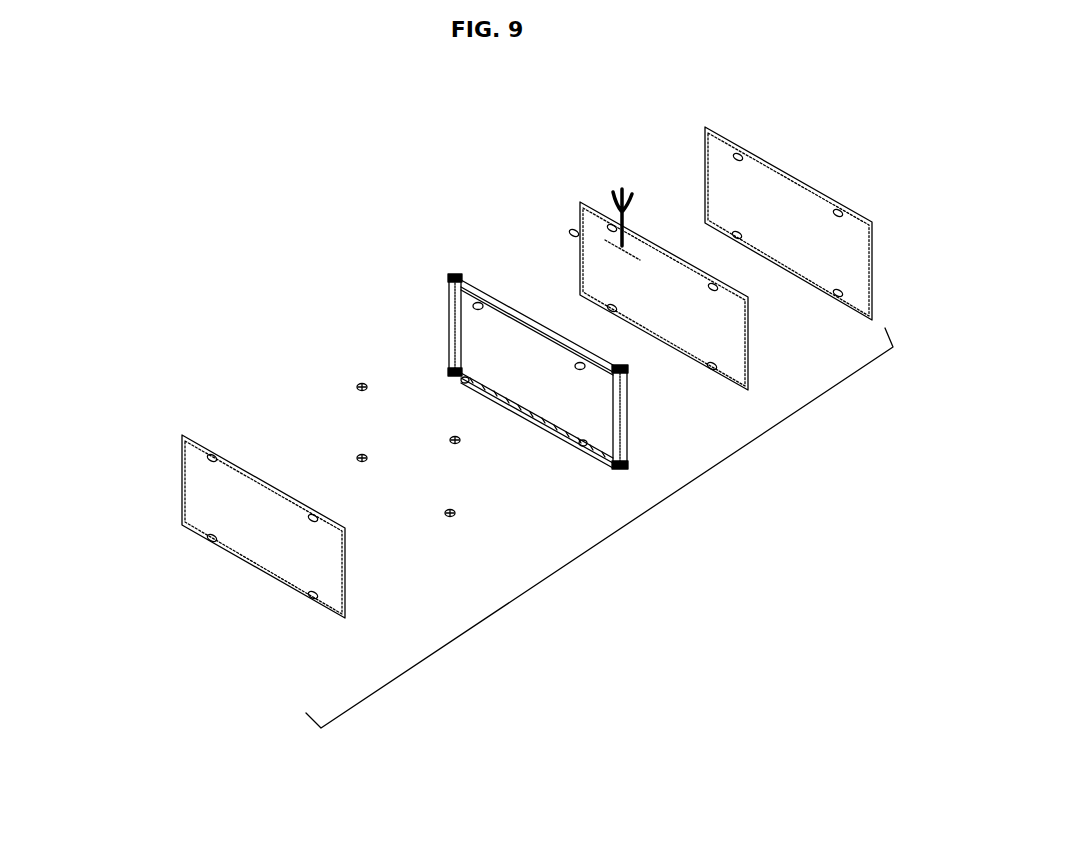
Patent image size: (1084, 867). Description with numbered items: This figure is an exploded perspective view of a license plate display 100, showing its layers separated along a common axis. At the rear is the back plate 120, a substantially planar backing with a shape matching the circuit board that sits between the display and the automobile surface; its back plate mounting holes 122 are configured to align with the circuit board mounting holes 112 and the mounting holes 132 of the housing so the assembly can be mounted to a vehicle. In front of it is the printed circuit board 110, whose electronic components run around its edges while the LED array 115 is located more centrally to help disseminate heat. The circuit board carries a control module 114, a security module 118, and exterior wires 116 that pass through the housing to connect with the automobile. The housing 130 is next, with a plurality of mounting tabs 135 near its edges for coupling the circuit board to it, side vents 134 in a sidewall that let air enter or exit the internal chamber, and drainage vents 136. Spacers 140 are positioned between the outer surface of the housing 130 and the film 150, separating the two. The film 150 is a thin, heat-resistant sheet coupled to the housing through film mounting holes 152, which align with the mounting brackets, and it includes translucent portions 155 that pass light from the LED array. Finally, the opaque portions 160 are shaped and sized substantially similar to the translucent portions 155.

The license plate display 100 is at (606, 537).
The printed circuit board 110 is at (585, 217).
The mounting brackets 112 is at (612, 226).
The control module 114 is at (620, 246).
The LED array 115 is at (737, 322).
The exterior wires 116 is at (632, 194).
The security module 118 is at (574, 232).
The back plate 120 is at (707, 152).
The back plate mounting holes 122 is at (740, 155).
The housing 130 is at (520, 350).
The mounting holes 132 is at (479, 306).
The side vents 134 is at (449, 300).
The mounting tabs 135 is at (456, 276).
The drainage vents 136 is at (518, 410).
The spacers 140 is at (361, 386).
The film 150 is at (185, 452).
The film mounting holes 152 is at (212, 457).
The translucent portions 155 is at (337, 588).
The opaque portions 160 is at (142, 625).